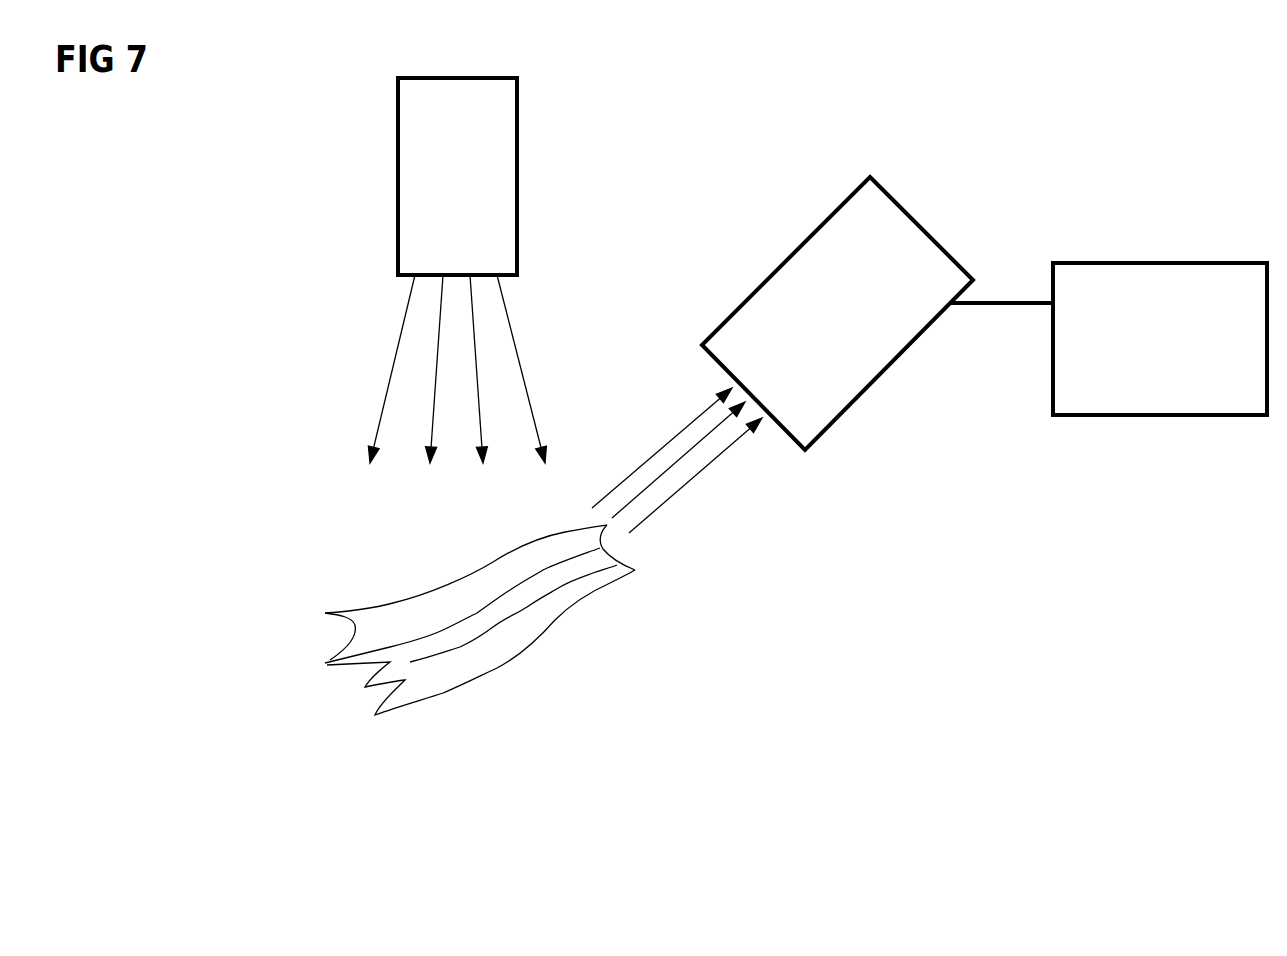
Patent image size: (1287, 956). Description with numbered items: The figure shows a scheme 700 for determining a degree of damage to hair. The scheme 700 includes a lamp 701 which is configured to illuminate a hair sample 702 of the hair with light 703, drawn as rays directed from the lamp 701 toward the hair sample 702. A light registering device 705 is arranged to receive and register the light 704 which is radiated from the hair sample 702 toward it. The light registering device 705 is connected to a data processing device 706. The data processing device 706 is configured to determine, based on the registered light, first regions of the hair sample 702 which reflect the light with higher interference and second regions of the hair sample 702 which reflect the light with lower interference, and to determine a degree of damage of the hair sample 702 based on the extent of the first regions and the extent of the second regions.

The scheme 700 is at (1095, 103).
The lamp 701 is at (505, 78).
The hair sample 702 is at (447, 678).
The light 703 is at (513, 338).
The light 704 is at (678, 487).
The light registering device 705 is at (850, 408).
The data processing device 706 is at (1195, 263).